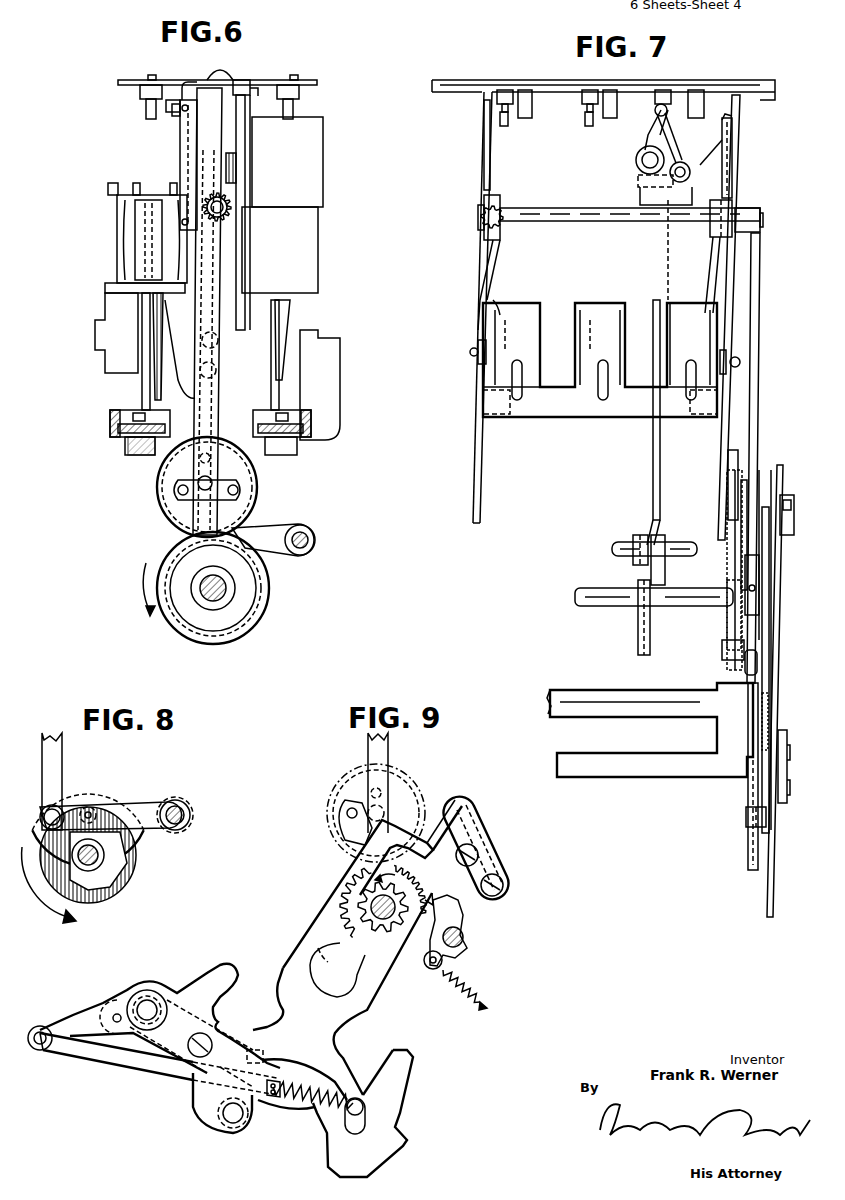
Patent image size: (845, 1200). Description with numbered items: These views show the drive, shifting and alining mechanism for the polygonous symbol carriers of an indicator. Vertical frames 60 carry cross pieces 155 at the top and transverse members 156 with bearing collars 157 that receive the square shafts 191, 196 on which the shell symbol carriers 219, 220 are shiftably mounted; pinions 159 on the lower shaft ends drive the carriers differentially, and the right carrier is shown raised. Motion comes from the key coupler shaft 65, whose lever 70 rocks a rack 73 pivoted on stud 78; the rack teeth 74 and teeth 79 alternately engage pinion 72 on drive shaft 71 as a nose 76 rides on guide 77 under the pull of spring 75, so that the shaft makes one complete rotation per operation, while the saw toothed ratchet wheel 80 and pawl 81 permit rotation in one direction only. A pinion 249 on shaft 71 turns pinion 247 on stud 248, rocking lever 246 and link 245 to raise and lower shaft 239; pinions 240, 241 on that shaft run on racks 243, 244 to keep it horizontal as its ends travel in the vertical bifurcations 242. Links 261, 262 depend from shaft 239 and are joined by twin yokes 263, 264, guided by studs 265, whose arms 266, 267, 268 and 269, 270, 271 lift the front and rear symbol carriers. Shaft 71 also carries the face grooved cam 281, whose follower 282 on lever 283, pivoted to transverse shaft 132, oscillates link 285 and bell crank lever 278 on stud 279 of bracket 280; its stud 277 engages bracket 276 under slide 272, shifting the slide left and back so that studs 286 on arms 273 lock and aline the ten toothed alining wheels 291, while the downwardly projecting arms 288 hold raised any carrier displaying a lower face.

In FIG. 6, the vertical frames 60 is at (205, 118).
In FIG. 7, the vertical frames 60 is at (772, 98).
In FIG. 7, the key coupler shaft 65 is at (640, 686).
In FIG. 9, the key coupler shaft 65 is at (140, 1005).
In FIG. 7, the lever 70 is at (748, 800).
In FIG. 9, the lever 70 is at (193, 1098).
In FIG. 6, the drive shaft 71 is at (205, 605).
In FIG. 7, the drive shaft 71 is at (580, 588).
In FIG. 8, the drive shaft 71 is at (100, 862).
In FIG. 9, the drive shaft 71 is at (372, 897).
In FIG. 7, the pinion 72 is at (770, 598).
In FIG. 9, the pinion 72 is at (345, 905).
In FIG. 7, the rack 73 is at (770, 639).
In FIG. 9, the rack 73 is at (300, 940).
In FIG. 9, the teeth 74 is at (353, 980).
In FIG. 9, the spring 75 is at (310, 1118).
In FIG. 7, the nose 76 is at (758, 520).
In FIG. 9, the nose 76 is at (428, 826).
In FIG. 7, the guide 77 is at (792, 495).
In FIG. 9, the guide 77 is at (474, 815).
In FIG. 7, the stud 78 is at (746, 815).
In FIG. 9, the stud 78 is at (233, 1123).
In FIG. 9, the teeth 79 is at (327, 956).
In FIG. 7, the saw toothed ratchet wheel 80 is at (727, 620).
In FIG. 9, the saw toothed ratchet wheel 80 is at (415, 883).
In FIG. 7, the pawl 81 is at (735, 651).
In FIG. 9, the pawl 81 is at (462, 912).
In FIG. 6, the transverse shaft 132 is at (302, 528).
In FIG. 7, the transverse shaft 132 is at (620, 545).
In FIG. 8, the transverse shaft 132 is at (168, 800).
In FIG. 7, the cross pieces 155 is at (609, 82).
In FIG. 6, the transverse members 156 is at (125, 450).
In FIG. 6, the bearing collars 157 is at (140, 460).
In FIG. 6, the pinions 159 is at (112, 425).
In FIG. 6, the square shaft 191 is at (142, 398).
In FIG. 6, the square shaft 196 is at (279, 340).
In FIG. 6, the number wheel 219 is at (318, 182).
In FIG. 6, the number wheel 220 is at (312, 240).
In FIG. 6, the shaft 239 is at (213, 203).
In FIG. 7, the shaft 239 is at (575, 222).
In FIG. 6, the pinion 240 is at (210, 195).
In FIG. 7, the pinion 240 is at (734, 205).
In FIG. 7, the pinion 241 is at (494, 205).
In FIG. 6, the vertical bifurcations 242 is at (195, 80).
In FIG. 6, the rack 243 is at (186, 130).
In FIG. 7, the rack 243 is at (722, 130).
In FIG. 7, the rack 244 is at (494, 136).
In FIG. 6, the link 245 is at (214, 432).
In FIG. 7, the link 245 is at (758, 324).
In FIG. 6, the lever 246 is at (212, 480).
In FIG. 7, the lever 246 is at (745, 480).
In FIG. 6, the pinion 247 is at (256, 490).
In FIG. 7, the pinion 247 is at (728, 456).
In FIG. 9, the pinion 247 is at (400, 778).
In FIG. 6, the stud 248 is at (178, 500).
In FIG. 7, the stud 248 is at (728, 486).
In FIG. 9, the stud 248 is at (355, 805).
In FIG. 6, the pinion 249 is at (268, 579).
In FIG. 7, the pinion 249 is at (745, 568).
In FIG. 9, the pinion 249 is at (405, 872).
In FIG. 7, the link 261 is at (492, 263).
In FIG. 7, the link 262 is at (716, 272).
In FIG. 6, the yoke 263 is at (158, 388).
In FIG. 7, the yoke 263 is at (555, 416).
In FIG. 6, the yoke 264 is at (216, 415).
In FIG. 7, the guide stud 265 is at (470, 358).
In FIG. 7, the arm 266 is at (535, 312).
In FIG. 7, the arm 267 is at (630, 305).
In FIG. 6, the arm 268 is at (125, 300).
In FIG. 7, the arm 268 is at (712, 310).
In FIG. 7, the arm 269 is at (497, 300).
In FIG. 7, the arm 270 is at (580, 303).
In FIG. 6, the arm 271 is at (283, 313).
In FIG. 7, the arm 271 is at (665, 305).
In FIG. 6, the plate 272 is at (220, 68).
In FIG. 7, the plate 272 is at (575, 84).
In FIG. 7, the arms 273 is at (505, 90).
In FIG. 6, the bracket 276 is at (243, 82).
In FIG. 7, the bracket 276 is at (642, 142).
In FIG. 7, the stud 277 is at (686, 118).
In FIG. 7, the bell crank lever 278 is at (636, 162).
In FIG. 7, the stud 279 is at (638, 181).
In FIG. 7, the bracket 280 is at (640, 198).
In FIG. 7, the face grooved cam 281 is at (638, 620).
In FIG. 8, the face grooved cam 281 is at (98, 792).
In FIG. 7, the cam follower 282 is at (638, 565).
In FIG. 8, the cam follower 282 is at (110, 800).
In FIG. 7, the lever 283 is at (663, 538).
In FIG. 8, the lever 283 is at (160, 830).
In FIG. 7, the link 285 is at (653, 462).
In FIG. 8, the link 285 is at (56, 756).
In FIG. 6, the studs 286 is at (148, 95).
In FIG. 7, the studs 286 is at (590, 108).
In FIG. 6, the arms 288 is at (178, 112).
In FIG. 7, the arms 288 is at (712, 80).
In FIG. 6, the alining wheel 291 is at (130, 82).